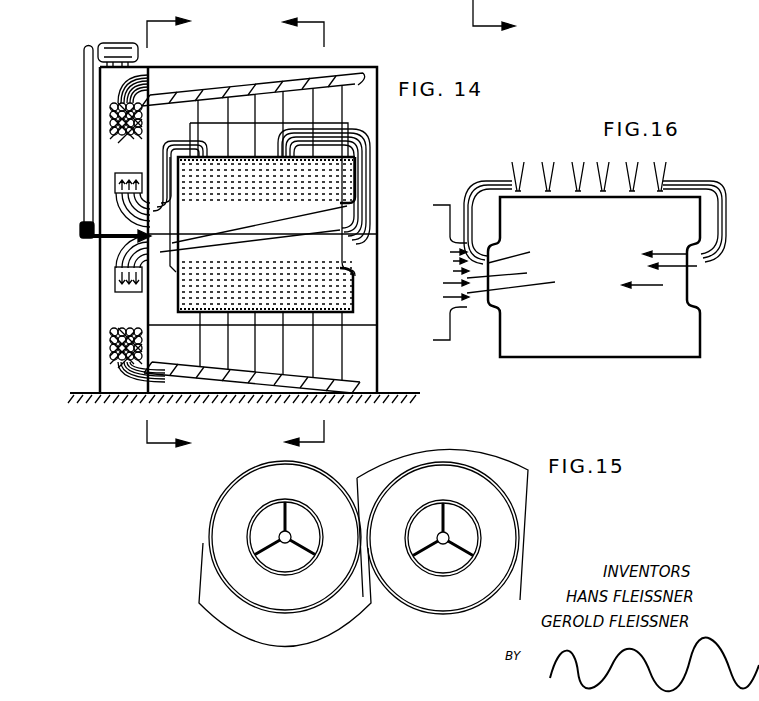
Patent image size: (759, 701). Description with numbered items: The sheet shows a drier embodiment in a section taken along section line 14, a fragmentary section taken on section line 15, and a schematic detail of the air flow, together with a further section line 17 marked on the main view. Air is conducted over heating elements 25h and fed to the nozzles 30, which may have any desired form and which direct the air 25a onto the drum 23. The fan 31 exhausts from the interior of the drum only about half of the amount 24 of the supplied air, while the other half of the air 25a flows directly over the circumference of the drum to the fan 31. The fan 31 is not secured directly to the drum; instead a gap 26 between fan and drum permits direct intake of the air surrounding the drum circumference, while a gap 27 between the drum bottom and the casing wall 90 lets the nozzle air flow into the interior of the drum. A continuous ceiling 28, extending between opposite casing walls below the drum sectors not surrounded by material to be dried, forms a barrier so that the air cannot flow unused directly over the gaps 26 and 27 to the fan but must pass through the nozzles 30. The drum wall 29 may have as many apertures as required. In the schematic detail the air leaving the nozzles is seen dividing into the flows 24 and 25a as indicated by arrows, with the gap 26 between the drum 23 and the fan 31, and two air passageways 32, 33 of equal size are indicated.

In FIG. 14, the section line 14 is at (506, 21).
In FIG. 14, the section line 15 is at (289, 235).
In FIG. 14, the viewing direction indicator for FIG. 17 is at (180, 235).
In FIG. 14, the drum 23 is at (277, 160).
In FIG. 16, the drum 23 is at (560, 355).
In FIG. 14, the amount of air 24 is at (263, 180).
In FIG. 16, the amount of air 24 is at (657, 269).
In FIG. 14, the air 25a is at (168, 168).
In FIG. 16, the air 25a is at (480, 215).
In FIG. 14, the heating elements 25h is at (112, 125).
In FIG. 14, the gap 26 is at (156, 270).
In FIG. 16, the gap 26 is at (475, 302).
In FIG. 14, the gap 27 is at (368, 292).
In FIG. 14, the ceiling 28 is at (355, 325).
In FIG. 14, the drum wall 29 is at (180, 290).
In FIG. 16, the nozzles 30 is at (578, 165).
In FIG. 14, the fan 31 is at (115, 180).
In FIG. 16, the fan 31 is at (447, 222).
In FIG. 14, the air passageway 32 is at (340, 265).
In FIG. 16, the air passageway 32 is at (683, 292).
In FIG. 14, the air passageway 33 is at (174, 222).
In FIG. 16, the air passageway 33 is at (512, 268).
In FIG. 14, the casing wall 90 is at (378, 208).